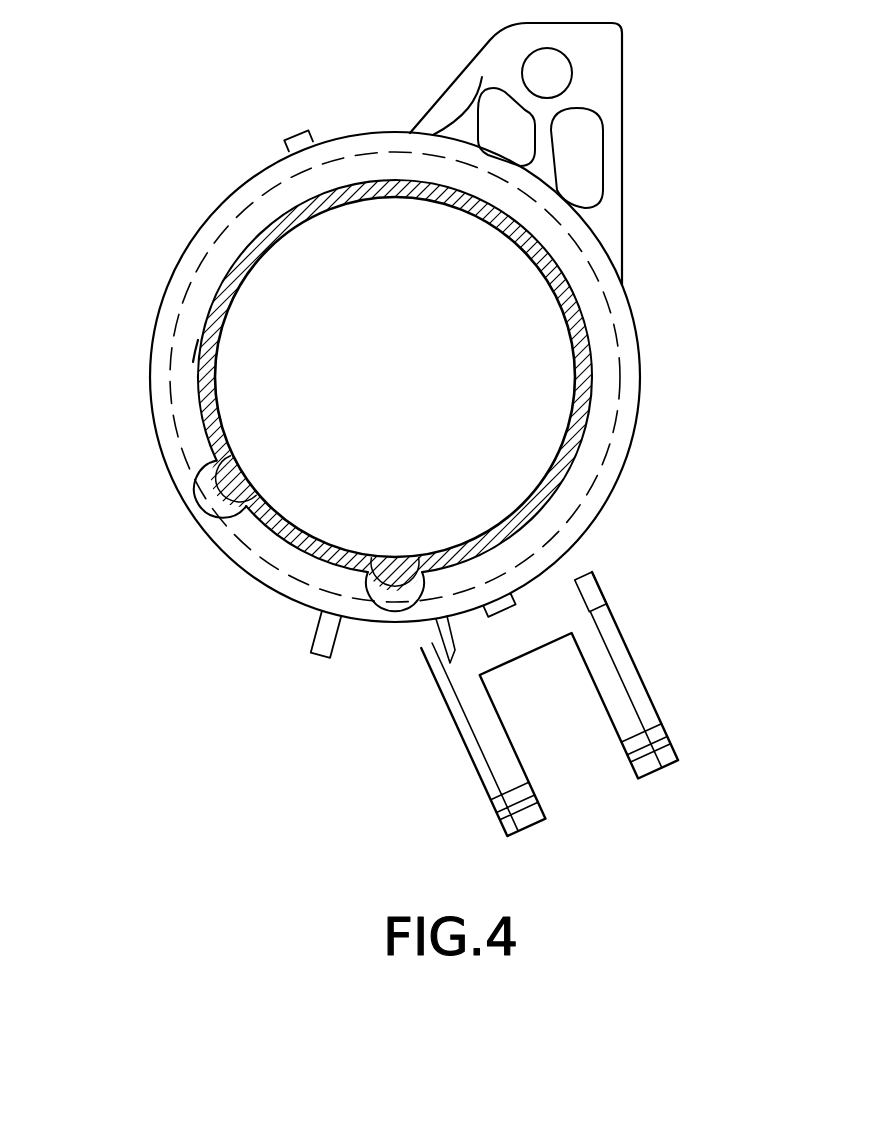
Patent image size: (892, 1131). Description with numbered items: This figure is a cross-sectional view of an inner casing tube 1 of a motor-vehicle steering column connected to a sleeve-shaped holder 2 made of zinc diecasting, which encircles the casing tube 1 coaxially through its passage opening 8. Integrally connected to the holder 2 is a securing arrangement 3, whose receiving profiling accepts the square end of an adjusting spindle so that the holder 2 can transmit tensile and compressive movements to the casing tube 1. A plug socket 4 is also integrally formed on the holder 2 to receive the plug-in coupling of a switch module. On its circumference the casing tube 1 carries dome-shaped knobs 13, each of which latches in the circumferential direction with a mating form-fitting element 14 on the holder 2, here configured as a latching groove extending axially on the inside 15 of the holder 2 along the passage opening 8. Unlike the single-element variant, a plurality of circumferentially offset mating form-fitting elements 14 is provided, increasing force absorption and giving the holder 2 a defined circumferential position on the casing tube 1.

The inner casing tube 1 is at (578, 418).
The holder 2 is at (632, 345).
The securing arrangement 3 is at (595, 65).
The plug socket 4 is at (628, 708).
The passage opening 8 is at (533, 338).
The dome-shaped knob 13 is at (397, 565).
The mating form-fitting element 14 is at (393, 588).
The inside of the holder 15 is at (193, 362).